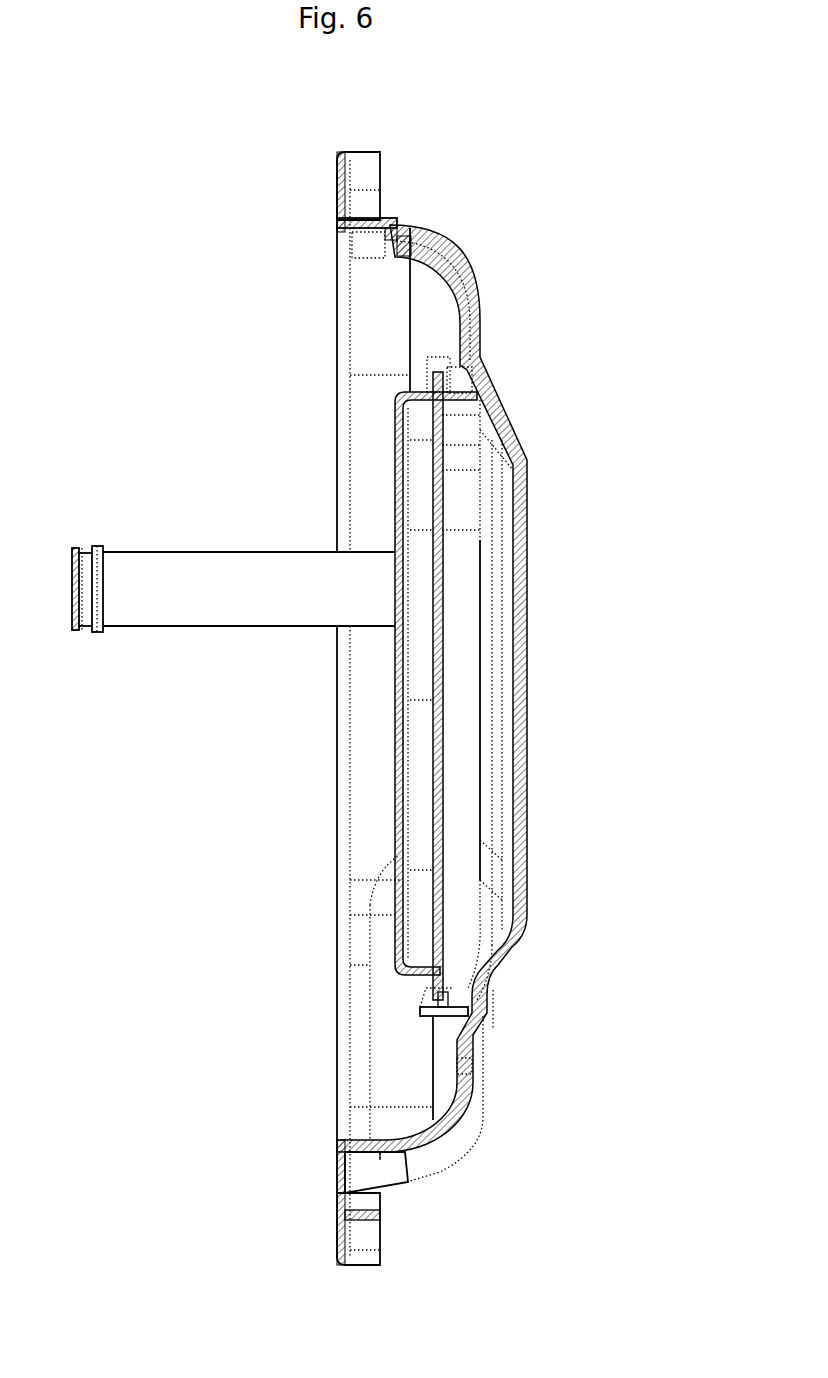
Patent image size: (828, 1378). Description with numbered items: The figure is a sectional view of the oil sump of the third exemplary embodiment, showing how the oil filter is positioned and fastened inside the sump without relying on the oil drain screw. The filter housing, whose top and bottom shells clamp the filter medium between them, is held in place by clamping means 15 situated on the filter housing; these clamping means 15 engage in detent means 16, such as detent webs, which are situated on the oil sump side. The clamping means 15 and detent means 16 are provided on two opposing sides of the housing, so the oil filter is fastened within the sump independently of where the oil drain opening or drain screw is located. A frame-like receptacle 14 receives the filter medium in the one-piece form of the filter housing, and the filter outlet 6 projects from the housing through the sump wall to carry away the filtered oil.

The filter outlet 6 is at (200, 600).
The receptacle 14 is at (455, 1004).
The clamping means 15 is at (400, 255).
The detent means 16 is at (385, 237).